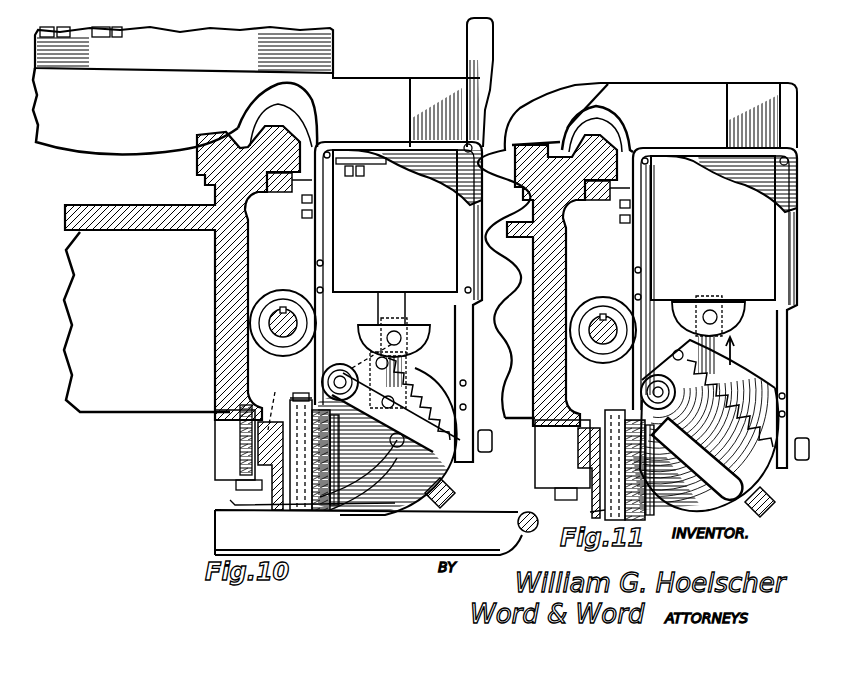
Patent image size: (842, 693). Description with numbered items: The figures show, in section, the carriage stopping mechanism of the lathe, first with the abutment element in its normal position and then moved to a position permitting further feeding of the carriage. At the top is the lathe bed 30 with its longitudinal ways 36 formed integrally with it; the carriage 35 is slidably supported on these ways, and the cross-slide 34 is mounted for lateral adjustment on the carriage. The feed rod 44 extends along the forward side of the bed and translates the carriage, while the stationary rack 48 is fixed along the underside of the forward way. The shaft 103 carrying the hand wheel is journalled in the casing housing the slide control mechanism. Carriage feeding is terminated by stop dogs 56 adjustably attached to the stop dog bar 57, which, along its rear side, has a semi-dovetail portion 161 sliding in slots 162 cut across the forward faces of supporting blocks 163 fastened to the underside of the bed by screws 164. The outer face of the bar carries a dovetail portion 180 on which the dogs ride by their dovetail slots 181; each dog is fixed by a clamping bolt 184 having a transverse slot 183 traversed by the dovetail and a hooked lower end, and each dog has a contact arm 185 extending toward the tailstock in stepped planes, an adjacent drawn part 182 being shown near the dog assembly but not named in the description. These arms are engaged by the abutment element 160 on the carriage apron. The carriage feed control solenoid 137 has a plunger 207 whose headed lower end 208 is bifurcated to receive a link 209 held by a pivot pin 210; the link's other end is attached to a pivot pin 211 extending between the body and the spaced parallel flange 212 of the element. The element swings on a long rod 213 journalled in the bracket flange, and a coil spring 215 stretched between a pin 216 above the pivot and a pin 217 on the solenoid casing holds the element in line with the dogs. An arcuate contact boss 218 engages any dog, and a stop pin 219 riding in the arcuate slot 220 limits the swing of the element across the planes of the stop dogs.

In FIG. 10, the lathe bed 30 is at (118, 210).
In FIG. 10, the cross-slide 34 is at (184, 44).
In FIG. 10, the carriage 35 is at (358, 90).
In FIG. 10, the longitudinal ways 36 is at (237, 152).
In FIG. 10, the feed rod 44 is at (300, 314).
In FIG. 10, the stationary rack 48 is at (283, 195).
In FIG. 10, the stop dogs 56 is at (313, 413).
In FIG. 10, the stop dog bar 57 is at (246, 486).
In FIG. 10, the shaft 103 is at (428, 77).
In FIG. 10, the carriage feed control solenoid 137 is at (395, 221).
In FIG. 10, the abutment element 160 is at (405, 482).
In FIG. 10, the semi-dovetail portion 161 is at (262, 455).
In FIG. 10, the slots 162 is at (258, 440).
In FIG. 10, the supporting blocks 163 is at (240, 430).
In FIG. 10, the screws 164 is at (235, 510).
In FIG. 10, the dovetail portion 180 is at (288, 505).
In FIG. 10, the dovetail slots 181 is at (316, 505).
In FIG. 10, the curved arm 182 is at (335, 430).
In FIG. 10, the transverse slot 183 is at (273, 393).
In FIG. 10, the clamping bolt 184 is at (272, 425).
In FIG. 10, the contact arm 185 is at (345, 495).
In FIG. 10, the plunger 207 is at (386, 300).
In FIG. 10, the headed lower end 208 is at (418, 330).
In FIG. 10, the link 209 is at (390, 364).
In FIG. 10, the pivot pin 210 is at (418, 340).
In FIG. 10, the pivot pin 211 is at (492, 440).
In FIG. 10, the spaced parallel flange 212 is at (466, 452).
In FIG. 11, the pivot rod 213 is at (646, 394).
In FIG. 11, the coil spring 215 is at (740, 384).
In FIG. 11, the pin 216 is at (676, 350).
In FIG. 11, the pin 217 is at (738, 494).
In FIG. 11, the arcuate contact boss 218 is at (590, 468).
In FIG. 11, the stop pin 219 is at (592, 511).
In FIG. 11, the slot 220 is at (556, 494).